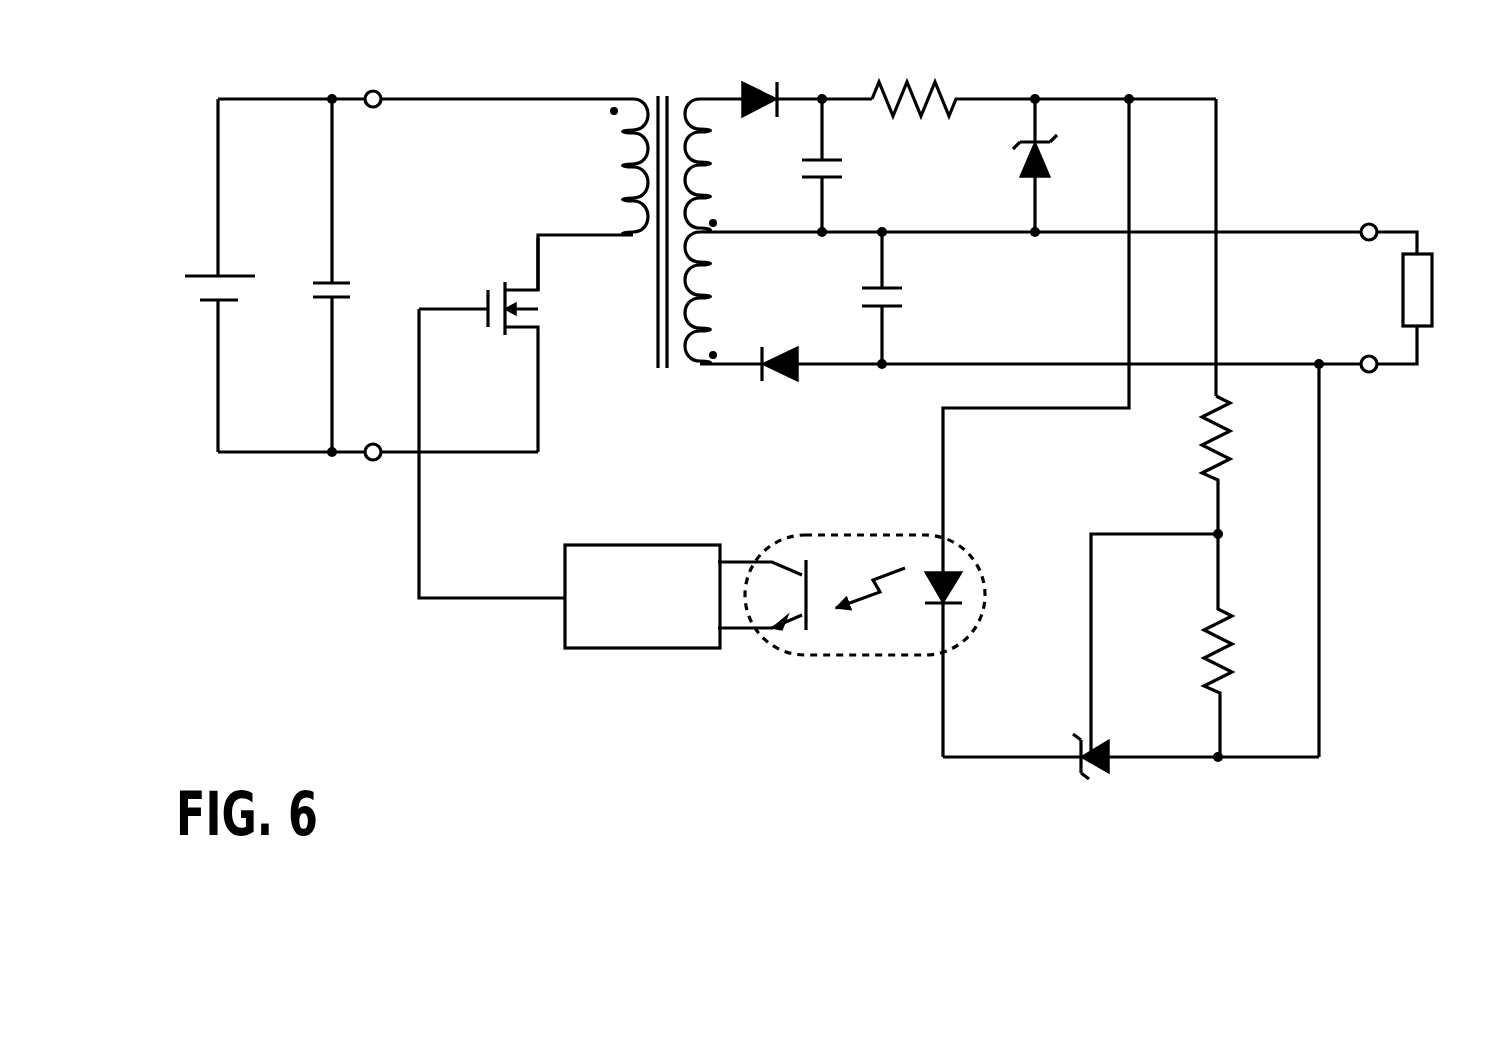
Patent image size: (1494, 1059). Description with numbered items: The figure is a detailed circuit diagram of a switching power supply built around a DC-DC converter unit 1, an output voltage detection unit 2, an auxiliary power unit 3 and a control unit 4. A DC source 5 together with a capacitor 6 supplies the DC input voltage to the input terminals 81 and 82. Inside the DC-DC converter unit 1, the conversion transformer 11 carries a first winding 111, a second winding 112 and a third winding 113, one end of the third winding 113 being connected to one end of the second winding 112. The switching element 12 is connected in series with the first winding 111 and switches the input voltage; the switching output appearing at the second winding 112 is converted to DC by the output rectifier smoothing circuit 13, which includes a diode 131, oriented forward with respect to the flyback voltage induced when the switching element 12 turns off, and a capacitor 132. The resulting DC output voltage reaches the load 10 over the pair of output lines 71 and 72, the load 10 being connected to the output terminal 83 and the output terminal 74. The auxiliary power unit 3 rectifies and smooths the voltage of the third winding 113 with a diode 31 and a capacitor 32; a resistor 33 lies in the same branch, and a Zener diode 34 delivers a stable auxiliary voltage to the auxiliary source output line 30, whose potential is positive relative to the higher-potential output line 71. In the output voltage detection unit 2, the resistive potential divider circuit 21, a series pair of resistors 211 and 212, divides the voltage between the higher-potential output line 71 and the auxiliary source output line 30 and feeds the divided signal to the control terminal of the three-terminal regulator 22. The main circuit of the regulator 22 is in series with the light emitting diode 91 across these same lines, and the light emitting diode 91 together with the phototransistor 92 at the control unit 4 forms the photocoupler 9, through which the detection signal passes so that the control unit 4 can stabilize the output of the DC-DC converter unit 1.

The DC-DC converter unit 1 is at (647, 239).
The output voltage detection unit 2 is at (1153, 619).
The auxiliary power unit 3 is at (979, 124).
The control unit 4 is at (650, 648).
The DC source 5 is at (192, 290).
The capacitor 6 is at (348, 290).
The photocoupler 9 is at (851, 600).
The load 10 is at (1430, 290).
The conversion transformer 11 is at (680, 197).
The switching element 12 is at (497, 284).
The output rectifier smoothing circuit 13 is at (1061, 340).
The resistive potential divider circuit 21 is at (1252, 566).
The 3-terminal regulator 22 is at (1100, 778).
The auxiliary source output line 30 is at (1204, 96).
The diode 31 is at (758, 80).
The capacitor 32 is at (838, 170).
The resistor 33 is at (912, 80).
The Zener diode 34 is at (1046, 160).
The higher-potential output line 71 is at (1258, 226).
The output line 72 is at (1274, 370).
The negative output terminal 74 is at (1370, 373).
The input terminal 81 is at (373, 90).
The input terminal 82 is at (375, 461).
The output terminal 83 is at (1370, 222).
The light emitting diode 91 is at (965, 573).
The phototransistor 92 is at (787, 560).
The first winding 111 is at (629, 158).
The second winding 112 is at (709, 275).
The third winding 113 is at (705, 201).
The diode 131 is at (785, 386).
The capacitor 132 is at (897, 298).
The resistor 211 is at (1202, 451).
The resistor 212 is at (1214, 648).